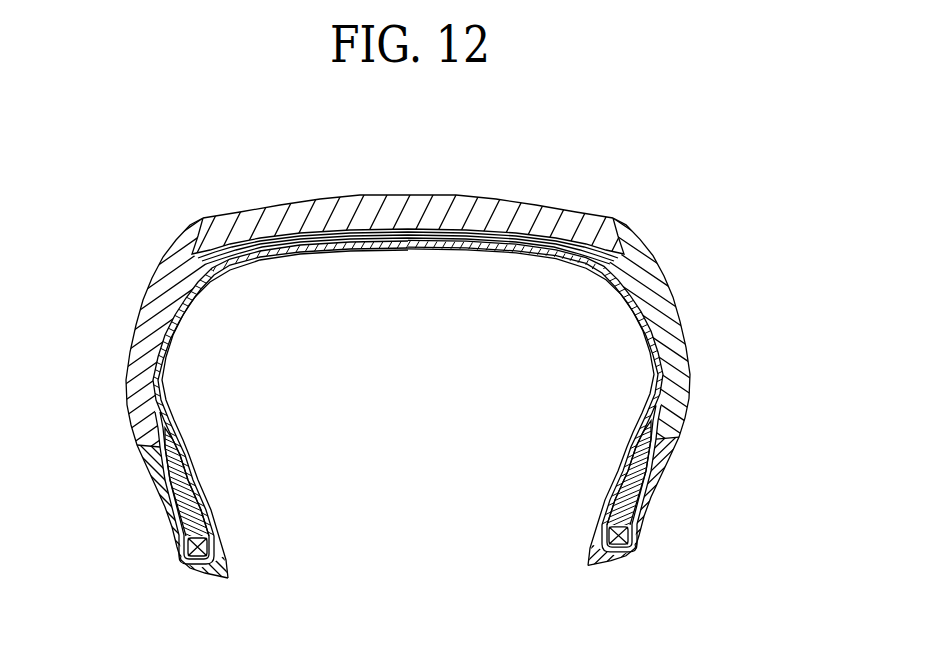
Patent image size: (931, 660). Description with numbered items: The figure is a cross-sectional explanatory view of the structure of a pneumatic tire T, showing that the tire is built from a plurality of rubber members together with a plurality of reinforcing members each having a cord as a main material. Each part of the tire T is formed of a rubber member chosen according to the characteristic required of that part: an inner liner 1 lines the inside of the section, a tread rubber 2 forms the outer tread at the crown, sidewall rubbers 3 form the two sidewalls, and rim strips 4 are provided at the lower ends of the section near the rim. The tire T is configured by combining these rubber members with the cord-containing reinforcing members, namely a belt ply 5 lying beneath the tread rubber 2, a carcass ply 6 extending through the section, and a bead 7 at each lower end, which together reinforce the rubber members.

The tire T is at (471, 161).
The inner liner 1 is at (401, 252).
The tread rubber 2 is at (374, 207).
The sidewall rubbers 3 is at (150, 265).
The rim strips 4 is at (202, 568).
The belt ply 5 is at (302, 237).
The carcass ply 6 is at (620, 470).
The bead 7 is at (207, 548).